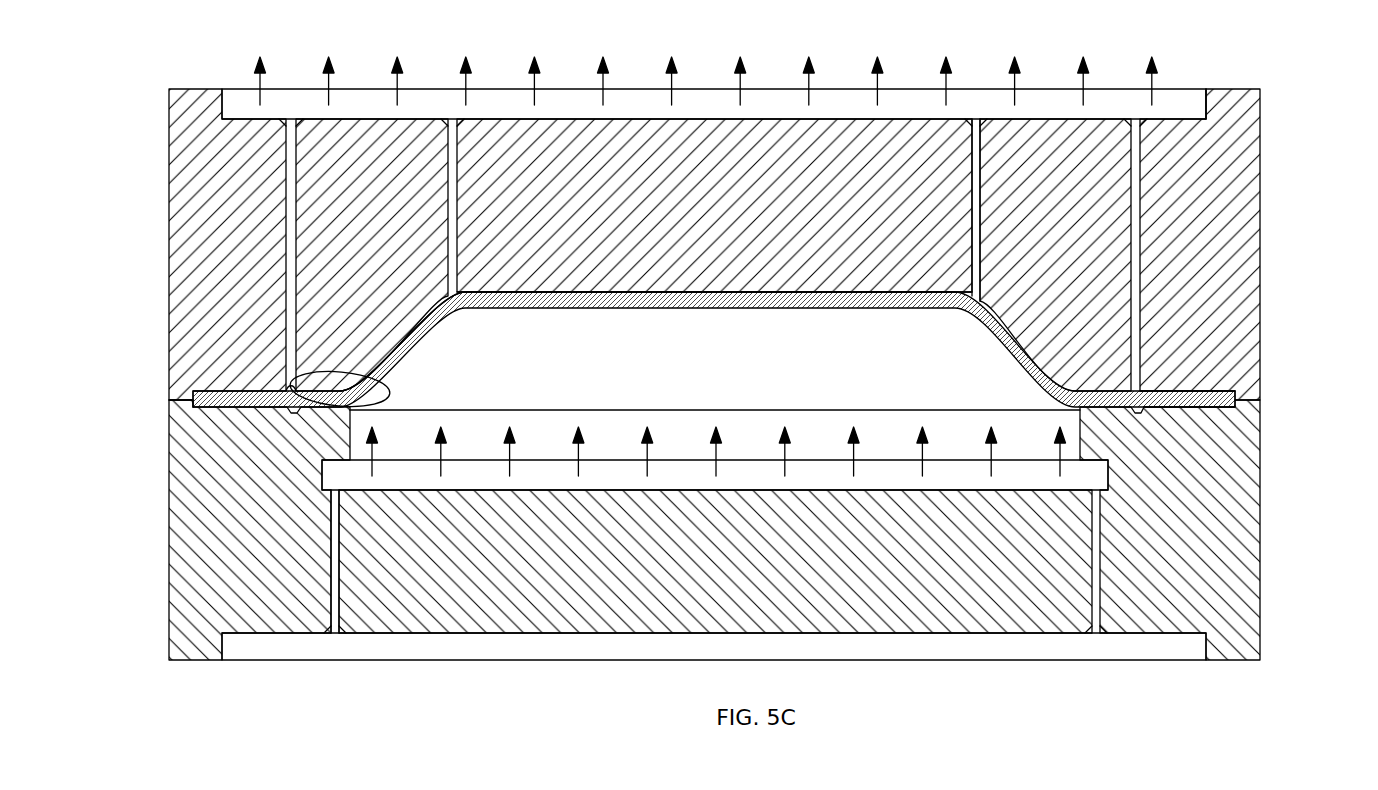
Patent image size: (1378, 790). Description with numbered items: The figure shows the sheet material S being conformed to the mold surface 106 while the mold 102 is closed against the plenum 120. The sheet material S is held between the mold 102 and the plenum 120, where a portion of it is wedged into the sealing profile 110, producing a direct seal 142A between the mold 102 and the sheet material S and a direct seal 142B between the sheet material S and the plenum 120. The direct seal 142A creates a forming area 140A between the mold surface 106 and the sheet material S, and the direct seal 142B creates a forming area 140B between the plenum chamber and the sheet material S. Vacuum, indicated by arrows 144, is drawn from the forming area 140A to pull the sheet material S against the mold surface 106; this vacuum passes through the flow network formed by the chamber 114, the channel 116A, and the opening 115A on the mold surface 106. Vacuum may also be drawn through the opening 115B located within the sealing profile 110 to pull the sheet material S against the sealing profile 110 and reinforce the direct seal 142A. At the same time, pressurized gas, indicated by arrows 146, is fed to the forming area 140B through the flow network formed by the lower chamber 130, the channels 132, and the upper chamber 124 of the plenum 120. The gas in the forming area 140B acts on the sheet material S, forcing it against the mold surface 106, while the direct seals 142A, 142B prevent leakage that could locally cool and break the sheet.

The mold 102 is at (1230, 90).
The mold surface 106 is at (775, 292).
The sheet material S is at (853, 293).
The sealing profile 110 is at (283, 400).
The chamber 114 is at (1206, 101).
The opening 115A is at (452, 306).
The opening 115B is at (388, 388).
The channel 116A is at (973, 140).
The plenum 120 is at (1225, 653).
The upper chamber 124 is at (957, 438).
The lower chamber 130 is at (228, 648).
The channel 132 is at (333, 613).
The forming area 140A is at (590, 293).
The forming area 140B is at (663, 376).
The direct seal 142A is at (1147, 381).
The direct seal 142B is at (1147, 410).
The arrows 144 is at (606, 80).
The arrows 146 is at (718, 457).